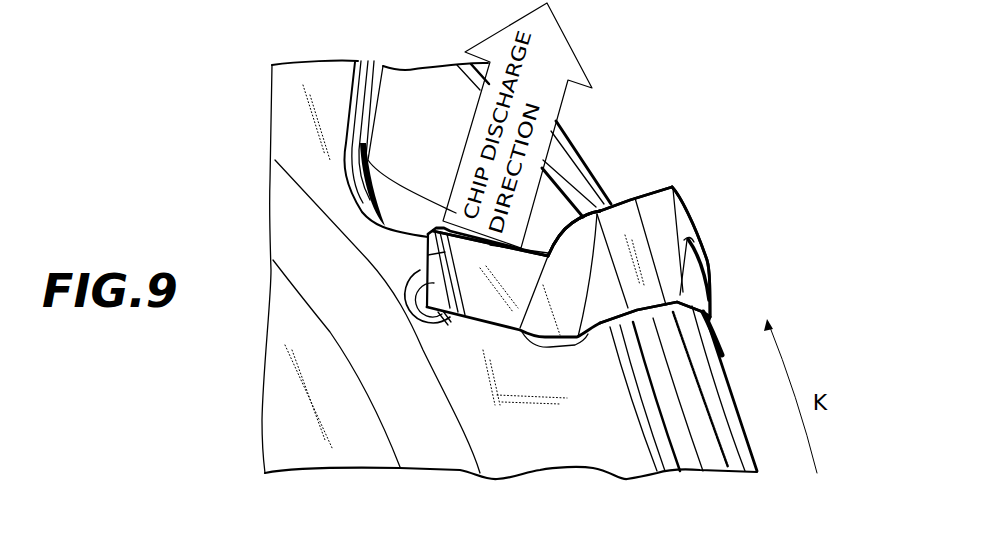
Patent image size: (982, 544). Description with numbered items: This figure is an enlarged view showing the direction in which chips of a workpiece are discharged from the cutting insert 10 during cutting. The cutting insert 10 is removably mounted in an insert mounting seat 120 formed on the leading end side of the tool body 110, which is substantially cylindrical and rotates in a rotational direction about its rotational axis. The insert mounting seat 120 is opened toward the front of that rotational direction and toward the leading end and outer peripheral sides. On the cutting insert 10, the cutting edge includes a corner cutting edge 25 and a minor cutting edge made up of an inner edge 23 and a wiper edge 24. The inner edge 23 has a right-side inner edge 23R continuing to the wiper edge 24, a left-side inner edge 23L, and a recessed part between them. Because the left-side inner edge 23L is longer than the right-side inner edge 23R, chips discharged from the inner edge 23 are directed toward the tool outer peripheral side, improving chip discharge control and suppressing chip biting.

The tool body 110 is at (287, 112).
The cutting insert 10 is at (663, 230).
The inner edge 23 is at (600, 57).
The left-side inner edge 23L is at (563, 229).
The right-side inner edge 23R is at (497, 243).
The wiper edge 24 is at (643, 178).
The corner cutting edge 25 is at (685, 180).
The insert mounting seat 120 is at (617, 306).